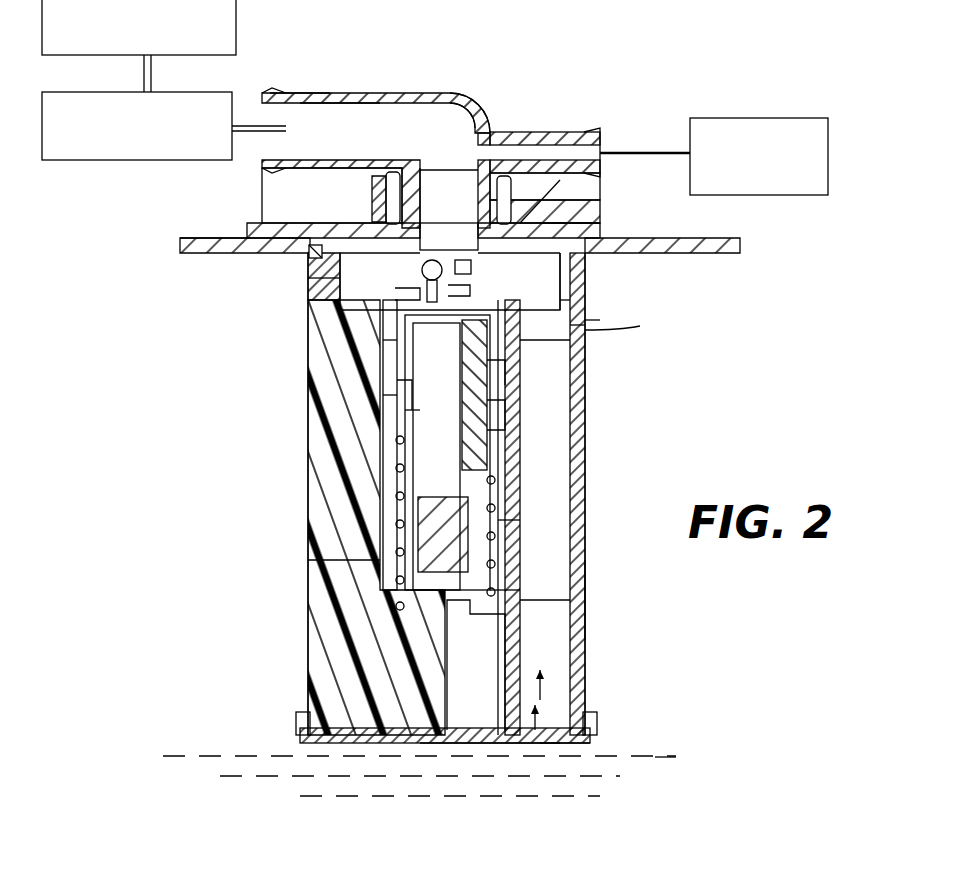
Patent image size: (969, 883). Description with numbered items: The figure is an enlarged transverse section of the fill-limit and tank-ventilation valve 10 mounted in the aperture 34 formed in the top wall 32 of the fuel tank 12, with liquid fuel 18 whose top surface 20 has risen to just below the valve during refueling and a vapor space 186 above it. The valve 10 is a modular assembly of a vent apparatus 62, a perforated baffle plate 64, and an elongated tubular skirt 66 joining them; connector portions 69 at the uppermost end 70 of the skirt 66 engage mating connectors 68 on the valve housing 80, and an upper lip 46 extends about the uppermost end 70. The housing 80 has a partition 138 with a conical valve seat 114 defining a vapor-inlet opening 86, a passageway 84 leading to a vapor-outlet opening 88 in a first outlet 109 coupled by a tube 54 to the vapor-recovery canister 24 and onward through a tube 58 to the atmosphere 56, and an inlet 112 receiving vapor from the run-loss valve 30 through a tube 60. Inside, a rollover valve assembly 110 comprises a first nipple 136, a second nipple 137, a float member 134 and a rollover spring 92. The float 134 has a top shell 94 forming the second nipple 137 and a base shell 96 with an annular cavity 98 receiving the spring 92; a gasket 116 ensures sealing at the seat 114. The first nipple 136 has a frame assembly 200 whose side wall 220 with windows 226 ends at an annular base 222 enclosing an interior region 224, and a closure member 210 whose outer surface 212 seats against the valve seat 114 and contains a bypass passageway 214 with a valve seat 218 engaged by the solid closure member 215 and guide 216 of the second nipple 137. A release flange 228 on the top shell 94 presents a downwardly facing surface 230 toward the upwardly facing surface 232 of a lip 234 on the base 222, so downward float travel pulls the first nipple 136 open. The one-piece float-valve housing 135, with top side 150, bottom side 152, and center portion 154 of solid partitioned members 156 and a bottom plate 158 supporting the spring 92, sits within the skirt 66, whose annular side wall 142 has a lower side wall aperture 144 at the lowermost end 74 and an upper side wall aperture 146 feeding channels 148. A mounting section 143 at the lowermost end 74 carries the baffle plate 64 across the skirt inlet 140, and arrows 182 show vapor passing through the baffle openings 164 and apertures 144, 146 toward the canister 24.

The fill-limit and tank-ventilation valve 10 is at (485, 92).
The fuel tank 12 is at (148, 258).
The liquid fuel 18 is at (290, 774).
The top surface of liquid fuel 20 is at (668, 758).
The vapor-recovery canister 24 is at (87, 147).
The run-loss valve 30 is at (752, 118).
The top wall 32 is at (718, 250).
The aperture 34 is at (310, 262).
The upper lip 46 is at (580, 238).
The tube 54 is at (249, 128).
The atmosphere 56 is at (236, 34).
The tube 58 is at (151, 73).
The tube 60 is at (645, 152).
The vent apparatus 62 is at (498, 118).
The perforated baffle plate 64 is at (570, 748).
The tubular skirt 66 is at (608, 452).
The connectors 68 is at (588, 262).
The connector portions 69 is at (312, 278).
The uppermost end 70 is at (629, 338).
The lowermost end 74 is at (572, 690).
The valve housing 80 is at (600, 228).
The passageway 84 is at (380, 128).
The vapor-inlet opening 86 is at (452, 230).
The vapor-outlet opening 88 is at (320, 110).
The rollover spring 92 is at (383, 522).
The top shell 94 is at (406, 446).
The base shell 96 is at (520, 440).
The annular cavity 98 is at (530, 585).
The first outlet 109 is at (290, 94).
The rollover valve assembly 110 is at (572, 512).
The inlet 112 is at (560, 132).
The valve seat 114 is at (428, 200).
The gasket 116 is at (500, 288).
The float member 134 is at (548, 500).
The float-valve housing 135 is at (515, 530).
The first nipple 136 is at (390, 255).
The second nipple 137 is at (474, 268).
The partition 138 is at (553, 220).
The skirt inlet 140 is at (598, 720).
The annular side wall 142 is at (578, 598).
The mounting section 143 is at (300, 722).
The lower side wall aperture 144 is at (582, 700).
The upper side wall aperture 146 is at (600, 330).
The channels 148 is at (550, 582).
The top side 150 is at (330, 284).
The bottom side 152 is at (505, 740).
The center portion 154 is at (332, 548).
The solid partitioned members 156 is at (310, 600).
The bottom plate 158 is at (462, 603).
The baffle openings 164 is at (490, 742).
The arrows 182 is at (580, 338).
The vapor space 186 is at (236, 270).
The frame assembly 200 is at (388, 352).
The closure member 210 is at (412, 272).
The outer surface 212 is at (470, 262).
The bypass passageway 214 is at (452, 258).
The solid closure member 215 is at (547, 350).
The guide 216 is at (422, 262).
The valve seat 218 is at (588, 306).
The side wall 220 is at (388, 386).
The annular base 222 is at (500, 420).
The interior region 224 is at (448, 316).
The windows 226 is at (400, 394).
The release flange 228 is at (488, 374).
The downwardly facing surface 230 is at (408, 398).
The upwardly facing surface 232 is at (488, 395).
The lip 234 is at (412, 410).